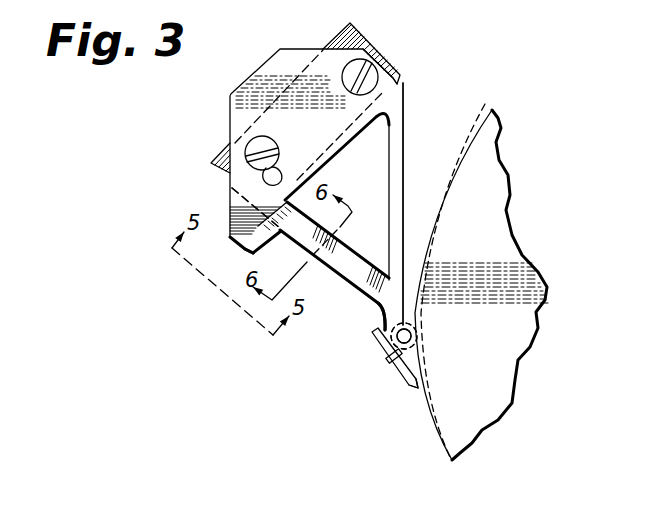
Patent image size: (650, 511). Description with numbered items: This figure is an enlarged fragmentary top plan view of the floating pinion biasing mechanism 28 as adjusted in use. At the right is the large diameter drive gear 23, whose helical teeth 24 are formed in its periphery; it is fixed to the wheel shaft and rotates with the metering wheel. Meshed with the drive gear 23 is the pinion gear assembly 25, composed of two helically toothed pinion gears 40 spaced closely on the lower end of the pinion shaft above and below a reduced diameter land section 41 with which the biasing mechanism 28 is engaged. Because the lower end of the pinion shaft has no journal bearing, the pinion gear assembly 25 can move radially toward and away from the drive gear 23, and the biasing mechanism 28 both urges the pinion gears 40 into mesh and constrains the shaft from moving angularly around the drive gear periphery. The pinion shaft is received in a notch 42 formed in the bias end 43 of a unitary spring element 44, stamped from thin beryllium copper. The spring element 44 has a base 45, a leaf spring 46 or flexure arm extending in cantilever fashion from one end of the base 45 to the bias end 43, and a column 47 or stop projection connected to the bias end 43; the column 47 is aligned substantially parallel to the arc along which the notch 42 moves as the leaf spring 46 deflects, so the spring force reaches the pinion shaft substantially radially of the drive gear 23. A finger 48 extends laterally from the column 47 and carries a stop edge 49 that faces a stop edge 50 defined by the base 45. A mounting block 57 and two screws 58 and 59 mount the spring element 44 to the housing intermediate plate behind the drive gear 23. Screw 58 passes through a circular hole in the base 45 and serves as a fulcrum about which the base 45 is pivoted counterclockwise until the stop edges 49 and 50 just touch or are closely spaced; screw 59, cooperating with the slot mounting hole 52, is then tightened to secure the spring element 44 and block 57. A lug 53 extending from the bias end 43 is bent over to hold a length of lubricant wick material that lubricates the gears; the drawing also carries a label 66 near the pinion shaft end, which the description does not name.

The drive gear 23 is at (495, 178).
The helical teeth 24 is at (485, 104).
The pinion gear assembly 25 is at (413, 323).
The biasing mechanism 28 is at (203, 121).
The pinion gears 40 is at (417, 353).
The reduced diameter land section 41 is at (417, 331).
The notch 42 is at (417, 342).
The bias end 43 is at (378, 305).
The spring element 44 is at (258, 95).
The base 45 is at (353, 130).
The leaf spring 46 is at (410, 136).
The column 47 is at (379, 250).
The finger 48 is at (263, 241).
The stop edge 49 is at (250, 197).
The stop edge 50 is at (256, 250).
The slot mounting hole 52 is at (268, 182).
The lug 53 is at (387, 360).
The mounting block 57 is at (364, 38).
The mounting screw 58 is at (374, 76).
The mounting screw 59 is at (245, 144).
The pin tip 66 is at (411, 379).